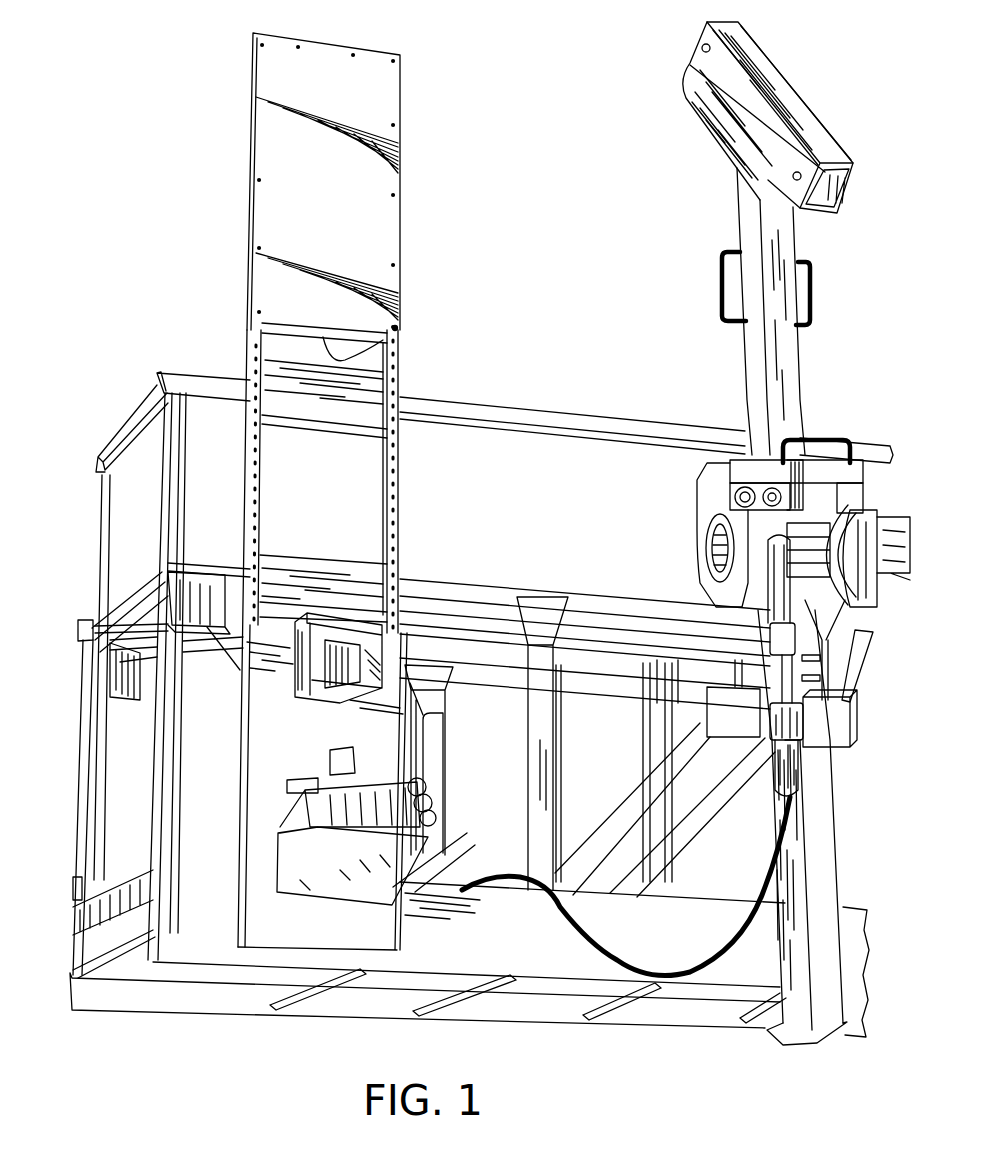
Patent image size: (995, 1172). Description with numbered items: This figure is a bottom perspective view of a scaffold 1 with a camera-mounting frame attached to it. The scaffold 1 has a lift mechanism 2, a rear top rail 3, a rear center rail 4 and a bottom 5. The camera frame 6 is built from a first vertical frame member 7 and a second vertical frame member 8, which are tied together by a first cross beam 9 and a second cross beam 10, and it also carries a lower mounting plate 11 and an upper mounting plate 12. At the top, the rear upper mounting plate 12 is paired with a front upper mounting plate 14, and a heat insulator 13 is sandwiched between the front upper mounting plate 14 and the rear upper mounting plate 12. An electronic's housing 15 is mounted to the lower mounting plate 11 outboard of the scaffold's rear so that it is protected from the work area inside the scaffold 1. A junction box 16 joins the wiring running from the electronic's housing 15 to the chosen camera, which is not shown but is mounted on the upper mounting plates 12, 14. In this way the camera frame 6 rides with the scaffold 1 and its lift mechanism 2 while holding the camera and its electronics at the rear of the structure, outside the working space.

The scaffold 1 is at (822, 420).
The lift mechanism 2 is at (800, 363).
The rear top rail 3 is at (533, 410).
The rear center rail 4 is at (487, 587).
The bottom 5 is at (100, 953).
The camera frame 6 is at (402, 50).
The first vertical frame member 7 is at (258, 340).
The second vertical frame member 8 is at (400, 350).
The first cross beam 9 is at (373, 413).
The second cross beam 10 is at (363, 582).
The lower mounting plate 11 is at (292, 757).
The rear upper mounting plate 12 is at (337, 254).
The heat insulator 13 is at (403, 329).
The front upper mounting plate 14 is at (247, 78).
The electronic's housing 15 is at (403, 810).
The junction box 16 is at (372, 640).